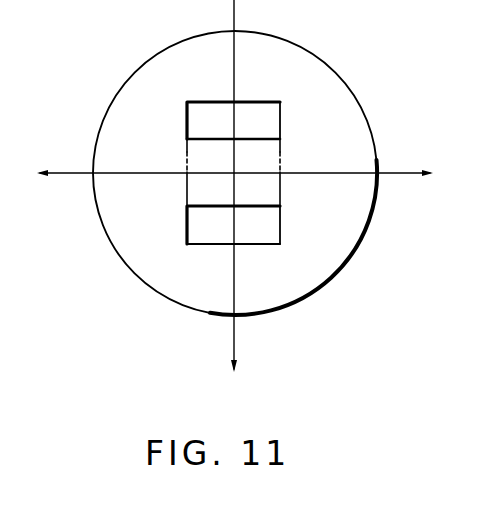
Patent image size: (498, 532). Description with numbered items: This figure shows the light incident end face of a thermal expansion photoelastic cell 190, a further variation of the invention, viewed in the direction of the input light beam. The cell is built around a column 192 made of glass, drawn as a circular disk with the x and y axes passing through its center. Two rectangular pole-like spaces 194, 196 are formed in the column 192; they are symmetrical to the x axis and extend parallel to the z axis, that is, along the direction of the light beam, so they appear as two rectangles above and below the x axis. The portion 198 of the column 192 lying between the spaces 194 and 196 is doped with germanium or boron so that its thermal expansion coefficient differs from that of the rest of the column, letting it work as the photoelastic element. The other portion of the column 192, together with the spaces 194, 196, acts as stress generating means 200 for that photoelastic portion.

The thermal expansion photoelastic cell 190 is at (318, 51).
The column 192 is at (347, 130).
The rectangular pole-like space 194 is at (198, 124).
The rectangular pole-like space 196 is at (202, 242).
The portion of column between spaces 198 is at (269, 188).
The stress generating means 200 is at (142, 180).